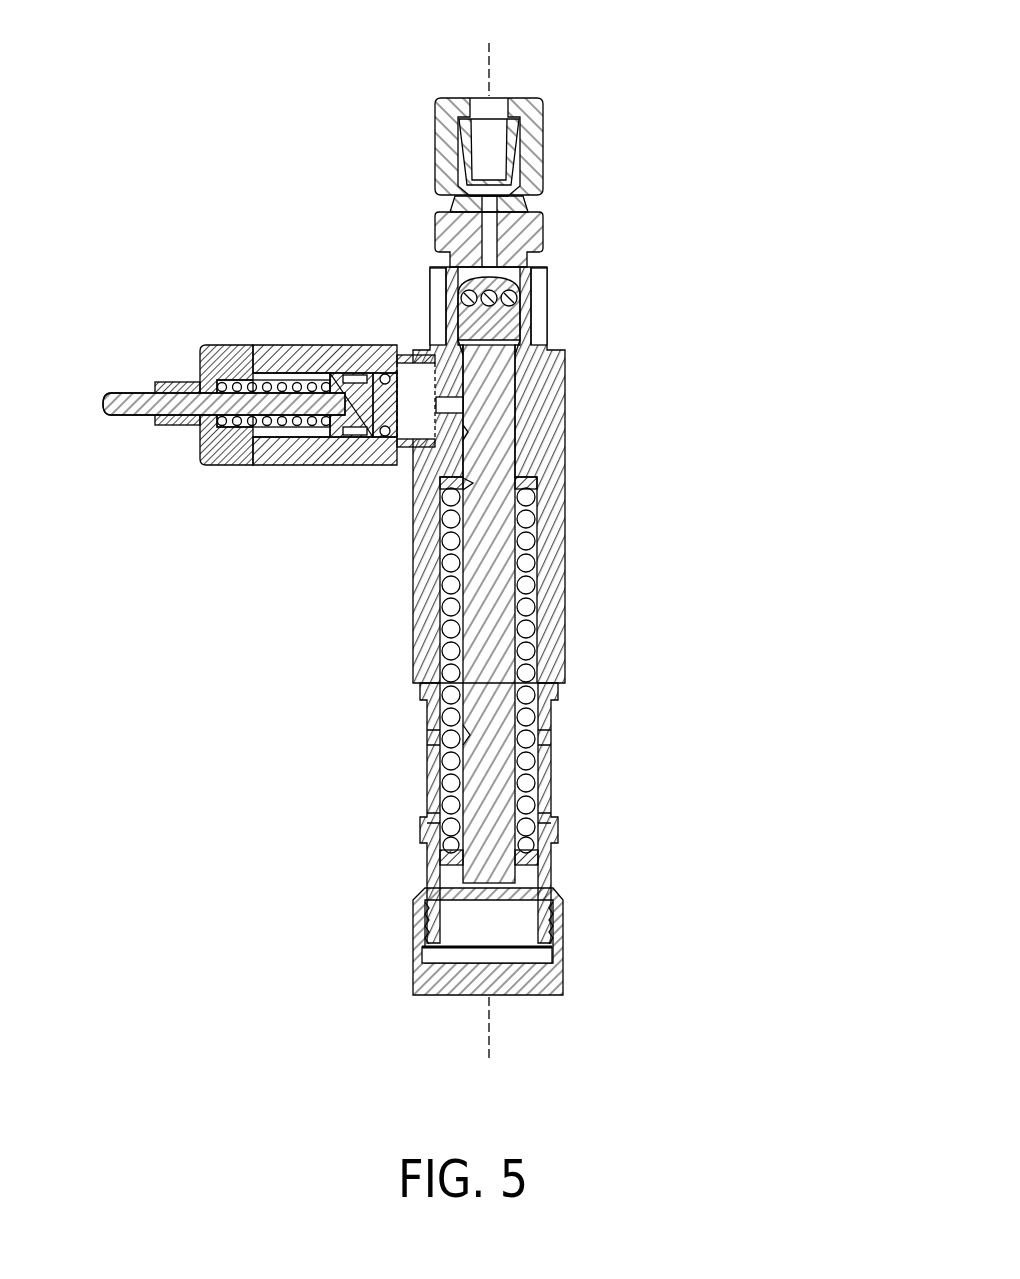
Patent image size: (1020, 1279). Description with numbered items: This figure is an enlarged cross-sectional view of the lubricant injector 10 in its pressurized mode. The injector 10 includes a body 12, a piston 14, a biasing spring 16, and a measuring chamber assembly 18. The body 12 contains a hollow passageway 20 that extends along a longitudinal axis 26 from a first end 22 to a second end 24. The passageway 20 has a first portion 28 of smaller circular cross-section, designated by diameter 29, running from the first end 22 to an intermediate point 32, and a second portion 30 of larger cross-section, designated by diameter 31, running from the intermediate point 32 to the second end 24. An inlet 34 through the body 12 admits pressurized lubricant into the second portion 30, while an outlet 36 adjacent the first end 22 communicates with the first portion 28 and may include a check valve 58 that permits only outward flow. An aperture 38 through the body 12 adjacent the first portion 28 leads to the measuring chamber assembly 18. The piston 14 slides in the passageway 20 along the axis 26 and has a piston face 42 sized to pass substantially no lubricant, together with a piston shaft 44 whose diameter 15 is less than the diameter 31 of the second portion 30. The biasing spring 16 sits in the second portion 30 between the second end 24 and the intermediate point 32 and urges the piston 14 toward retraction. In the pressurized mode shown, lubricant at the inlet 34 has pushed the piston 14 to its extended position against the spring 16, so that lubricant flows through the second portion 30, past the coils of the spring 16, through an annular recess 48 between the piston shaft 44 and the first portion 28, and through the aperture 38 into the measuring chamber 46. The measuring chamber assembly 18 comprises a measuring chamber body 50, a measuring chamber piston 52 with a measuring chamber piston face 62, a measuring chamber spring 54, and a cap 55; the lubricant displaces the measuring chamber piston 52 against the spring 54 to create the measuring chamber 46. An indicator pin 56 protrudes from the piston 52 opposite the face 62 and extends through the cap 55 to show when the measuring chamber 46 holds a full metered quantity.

The lubricant injector 10 is at (647, 68).
The body 12 is at (565, 655).
The piston 14 is at (500, 410).
The diameter 15 is at (595, 722).
The biasing spring 16 is at (548, 540).
The measuring chamber assembly 18 is at (275, 347).
The hollow passageway 20 is at (433, 745).
The first end 22 is at (518, 343).
The second end 24 is at (548, 937).
The longitudinal axis 26 is at (488, 548).
The first portion 28 is at (567, 343).
The diameter 29 is at (405, 355).
The second portion 30 is at (588, 477).
The diameter 31 is at (400, 607).
The intermediate point 32 is at (565, 473).
The inlet 34 is at (548, 758).
The outlet 36 is at (555, 343).
The aperture 38 is at (462, 343).
The piston face 42 is at (473, 483).
The piston shaft 44 is at (500, 735).
The measuring chamber 46 is at (397, 362).
The annular recess 48 is at (462, 432).
The measuring chamber body 50 is at (277, 458).
The measuring chamber piston 52 is at (315, 365).
The measuring chamber spring 54 is at (237, 382).
The cap 55 is at (222, 450).
The indicator pin 56 is at (103, 400).
The check valve 58 is at (532, 340).
The measuring chamber piston face 62 is at (373, 440).